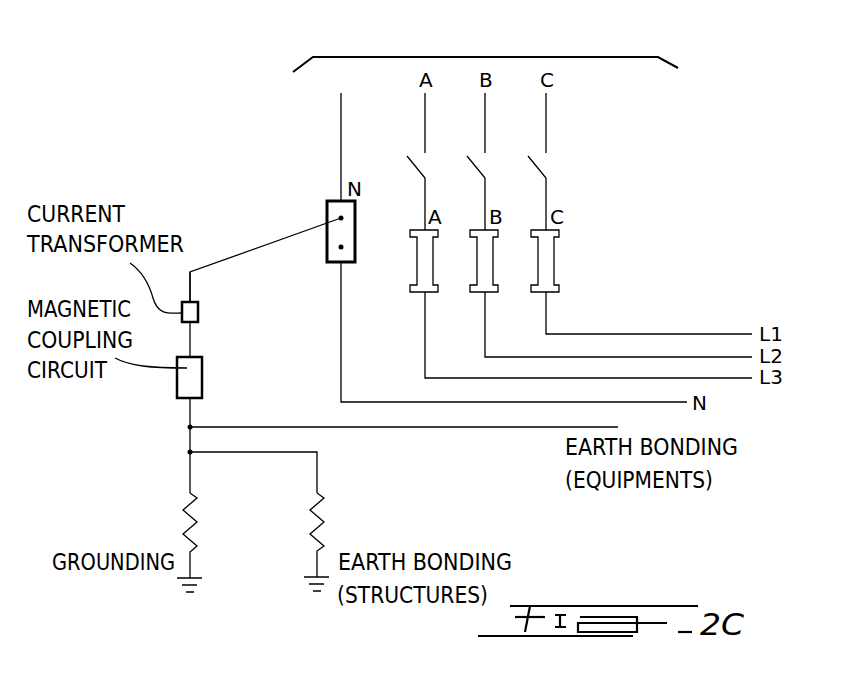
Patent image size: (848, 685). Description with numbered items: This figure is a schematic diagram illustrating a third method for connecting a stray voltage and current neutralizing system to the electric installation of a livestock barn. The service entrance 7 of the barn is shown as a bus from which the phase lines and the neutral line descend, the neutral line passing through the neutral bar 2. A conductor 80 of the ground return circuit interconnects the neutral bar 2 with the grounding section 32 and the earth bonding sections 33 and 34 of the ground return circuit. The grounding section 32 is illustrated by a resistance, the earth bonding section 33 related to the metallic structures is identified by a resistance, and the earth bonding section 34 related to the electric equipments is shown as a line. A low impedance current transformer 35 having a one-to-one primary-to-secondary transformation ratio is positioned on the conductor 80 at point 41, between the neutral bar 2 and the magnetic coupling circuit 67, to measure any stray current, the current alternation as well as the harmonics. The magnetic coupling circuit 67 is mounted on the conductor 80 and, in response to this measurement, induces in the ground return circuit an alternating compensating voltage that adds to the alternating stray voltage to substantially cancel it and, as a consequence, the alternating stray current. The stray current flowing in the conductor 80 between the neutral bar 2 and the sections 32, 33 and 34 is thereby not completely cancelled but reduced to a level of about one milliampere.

The service entrance 7 is at (415, 57).
The neutral bar 2 is at (327, 210).
The conductor 80 is at (233, 257).
The current transformer 35 is at (197, 302).
The point 41 is at (205, 312).
The magnetic coupling circuit 67 is at (193, 375).
The earth bonding section 34 is at (483, 428).
The grounding section 32 is at (183, 513).
The earth bonding section 33 is at (310, 513).